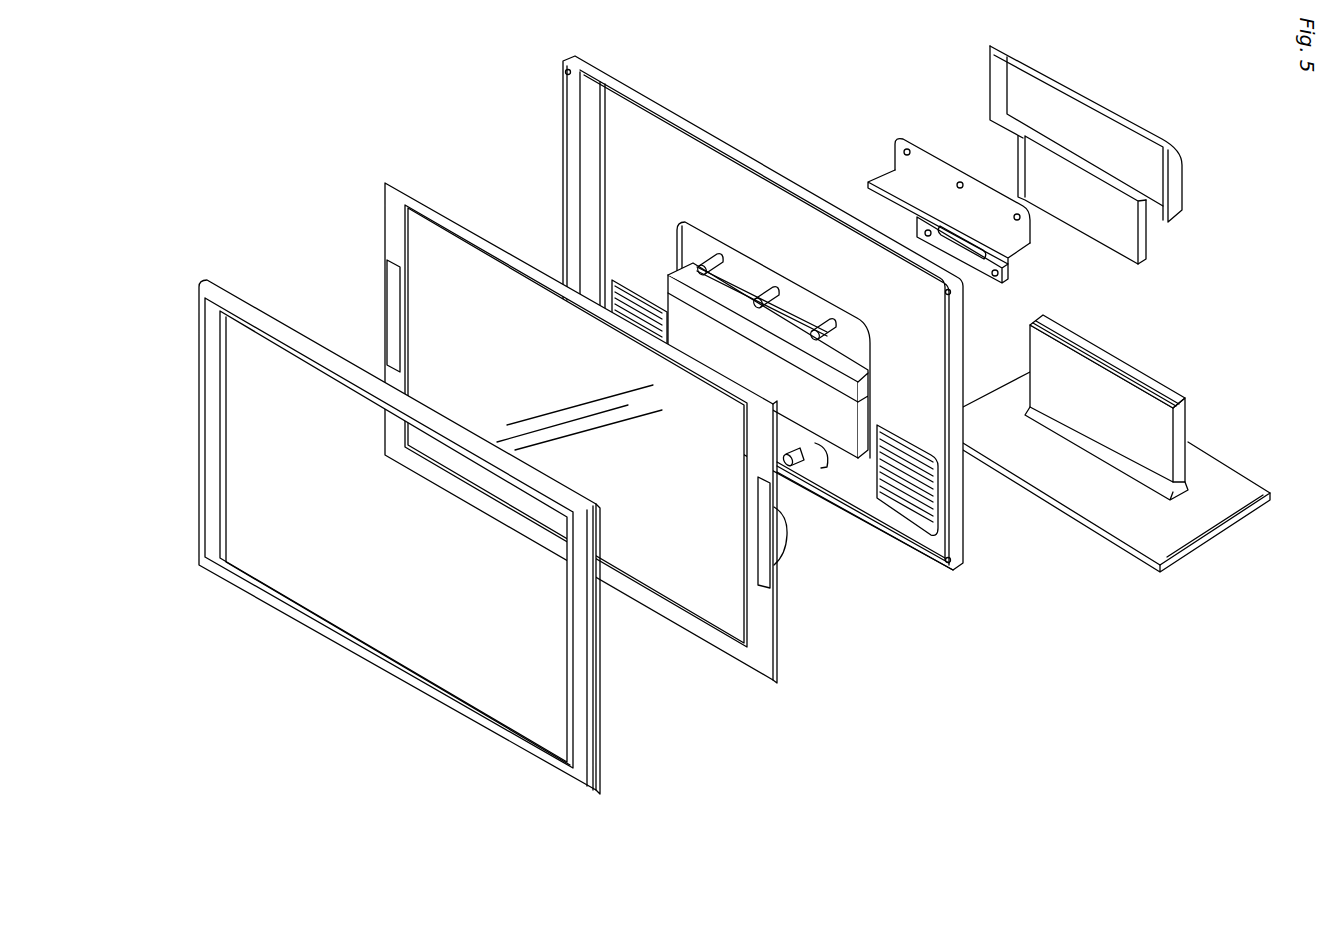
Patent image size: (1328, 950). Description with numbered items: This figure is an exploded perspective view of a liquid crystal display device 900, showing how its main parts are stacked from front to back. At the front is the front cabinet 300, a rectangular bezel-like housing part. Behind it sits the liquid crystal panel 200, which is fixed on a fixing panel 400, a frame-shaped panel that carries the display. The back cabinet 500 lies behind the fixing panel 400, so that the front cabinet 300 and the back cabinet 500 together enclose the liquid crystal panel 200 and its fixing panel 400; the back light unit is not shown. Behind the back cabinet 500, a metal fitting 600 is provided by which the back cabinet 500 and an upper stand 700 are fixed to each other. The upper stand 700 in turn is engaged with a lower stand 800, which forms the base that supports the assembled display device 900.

The liquid crystal display device 900 is at (309, 105).
The front cabinet 300 is at (245, 307).
The liquid crystal panel 200 is at (430, 250).
The fixing panel 400 is at (745, 660).
The back cabinet 500 is at (650, 135).
The metal fitting 600 is at (922, 160).
The upper stand 700 is at (1093, 122).
The lower stand 800 is at (1087, 490).